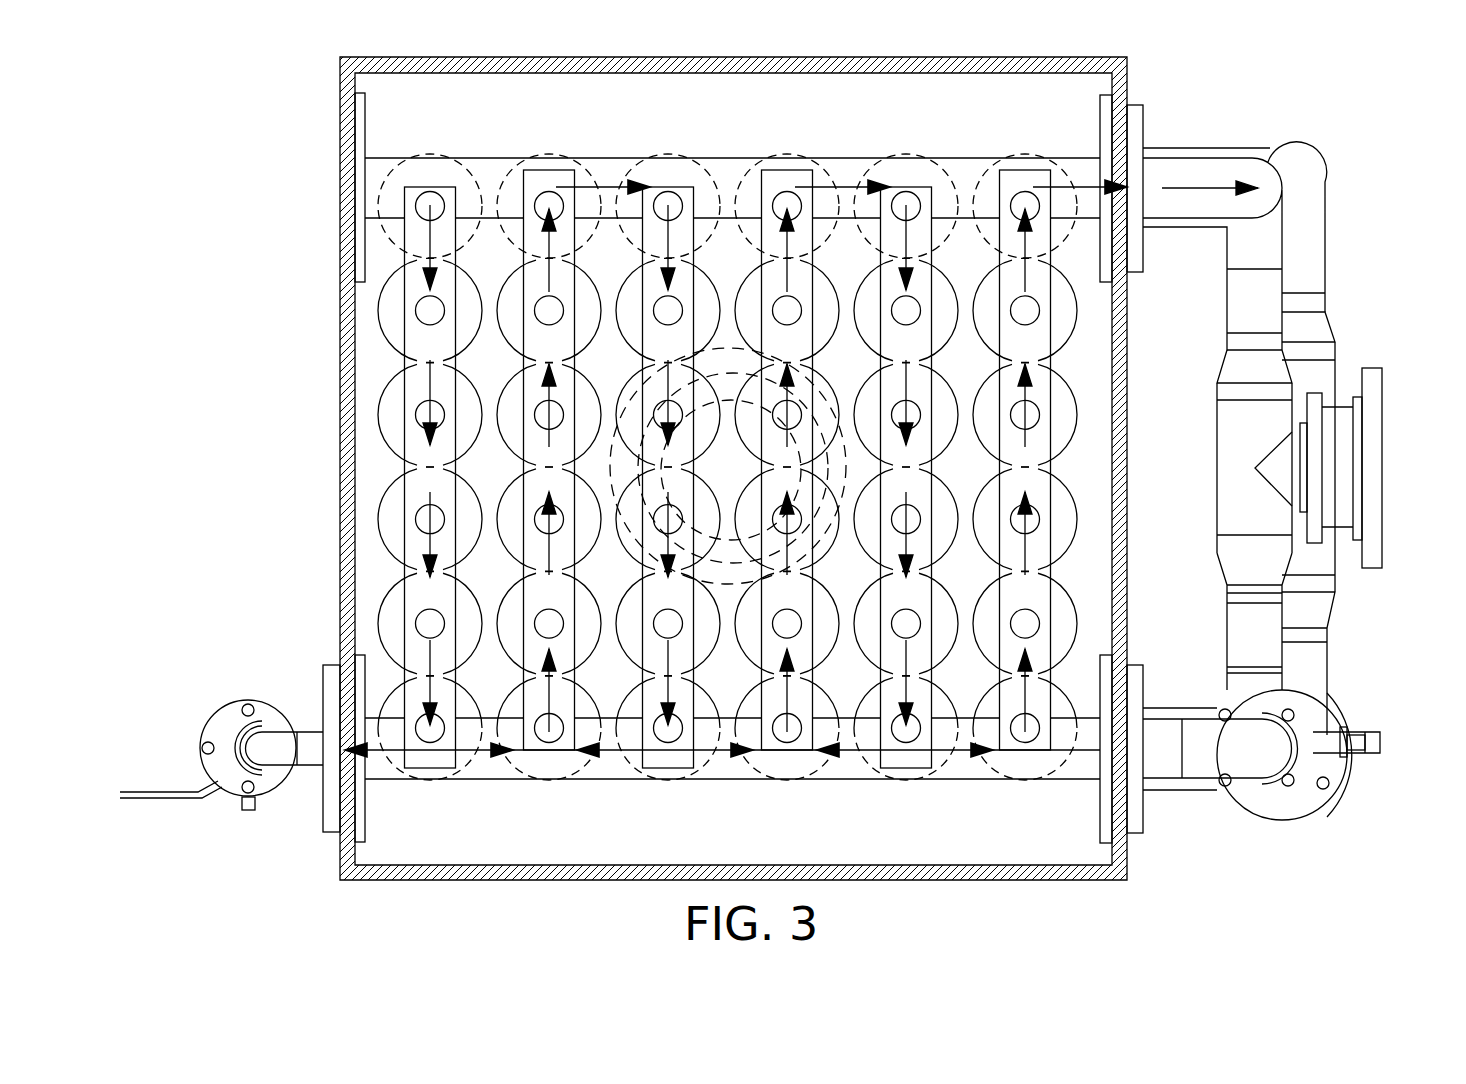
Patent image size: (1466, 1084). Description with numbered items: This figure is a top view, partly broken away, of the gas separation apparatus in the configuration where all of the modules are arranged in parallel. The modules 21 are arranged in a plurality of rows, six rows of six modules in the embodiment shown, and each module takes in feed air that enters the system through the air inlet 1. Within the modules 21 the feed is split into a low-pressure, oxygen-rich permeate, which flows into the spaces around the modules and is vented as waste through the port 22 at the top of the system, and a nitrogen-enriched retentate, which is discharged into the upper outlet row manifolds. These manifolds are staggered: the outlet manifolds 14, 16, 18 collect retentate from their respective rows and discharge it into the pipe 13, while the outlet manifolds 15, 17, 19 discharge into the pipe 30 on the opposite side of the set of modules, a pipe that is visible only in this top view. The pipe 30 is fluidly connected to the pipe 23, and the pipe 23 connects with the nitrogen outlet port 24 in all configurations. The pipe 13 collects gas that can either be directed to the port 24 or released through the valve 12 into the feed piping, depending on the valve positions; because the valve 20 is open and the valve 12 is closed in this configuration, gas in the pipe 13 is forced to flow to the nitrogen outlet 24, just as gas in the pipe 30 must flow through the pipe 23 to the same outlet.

The air inlet 1 is at (1382, 468).
The control valve 12 is at (226, 800).
The pipe 13 is at (612, 768).
The outlet manifold 14 is at (432, 753).
The outlet manifold 15 is at (551, 753).
The outlet manifold 16 is at (670, 753).
The outlet manifold 17 is at (789, 753).
The outlet manifold 18 is at (908, 753).
The outlet manifold 19 is at (1027, 753).
The control valve 20 is at (1328, 768).
The module 21 is at (513, 327).
The vent port 22 is at (833, 450).
The pipe 23 is at (1173, 168).
The nitrogen outlet port 24 is at (1327, 433).
The pipe 30 is at (723, 168).